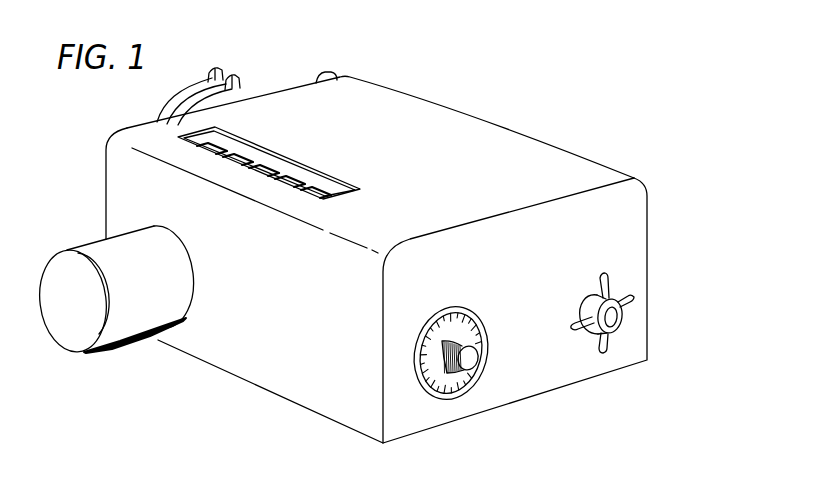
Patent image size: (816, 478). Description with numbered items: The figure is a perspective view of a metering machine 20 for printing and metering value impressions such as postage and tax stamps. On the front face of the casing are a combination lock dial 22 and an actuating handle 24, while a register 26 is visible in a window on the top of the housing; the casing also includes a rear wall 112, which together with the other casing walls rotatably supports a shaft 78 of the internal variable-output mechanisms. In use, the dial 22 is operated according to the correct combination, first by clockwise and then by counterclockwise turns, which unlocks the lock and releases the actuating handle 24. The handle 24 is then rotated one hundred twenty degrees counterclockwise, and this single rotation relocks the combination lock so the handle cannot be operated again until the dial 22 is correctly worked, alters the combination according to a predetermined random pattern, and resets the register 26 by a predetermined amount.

The metering machine 20 is at (560, 148).
The combination lock dial 22 is at (450, 390).
The actuating handle 24 is at (632, 299).
The register 26 is at (292, 162).
The shaft bore 78 is at (613, 317).
The rear wall 112 is at (334, 79).